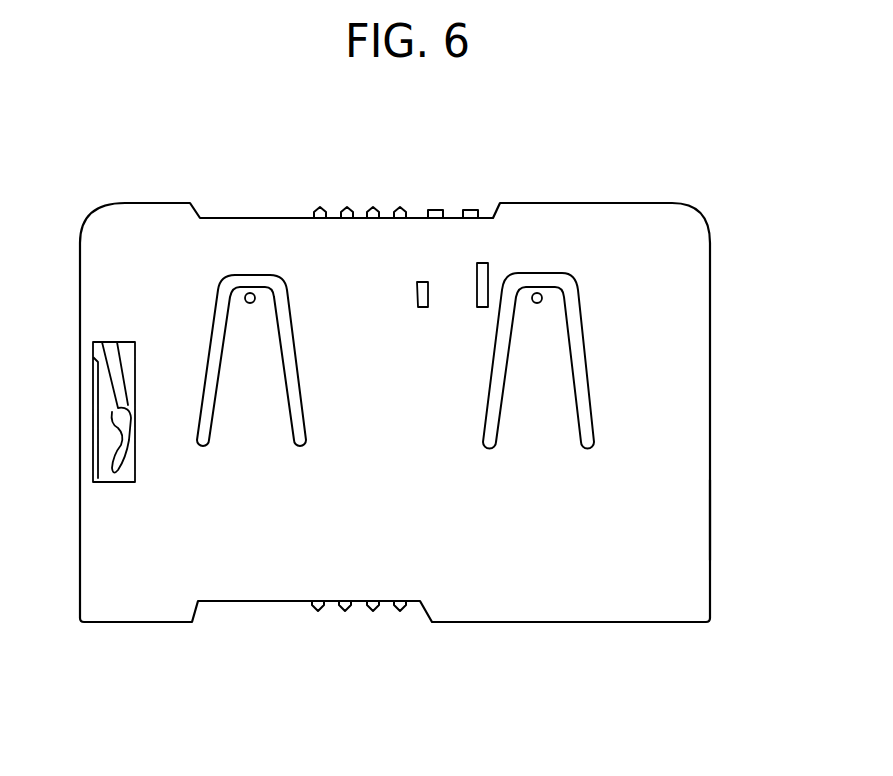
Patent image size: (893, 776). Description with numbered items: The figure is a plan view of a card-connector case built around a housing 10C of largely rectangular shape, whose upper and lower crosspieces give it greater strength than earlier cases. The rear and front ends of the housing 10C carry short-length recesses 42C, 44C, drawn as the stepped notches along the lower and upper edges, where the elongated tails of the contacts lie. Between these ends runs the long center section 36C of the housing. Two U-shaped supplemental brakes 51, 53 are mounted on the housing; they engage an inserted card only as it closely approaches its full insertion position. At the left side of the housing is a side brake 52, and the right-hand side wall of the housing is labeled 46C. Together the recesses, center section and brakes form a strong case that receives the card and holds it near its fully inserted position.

The housing 10C is at (720, 355).
The short-length recess 44C is at (258, 218).
The short-length recess 42C is at (258, 601).
The supplemental brake 51 is at (257, 396).
The supplemental brake 53 is at (549, 395).
The card detection latch 52 is at (125, 441).
The long center section 36C is at (368, 533).
The side wall 46C is at (622, 518).